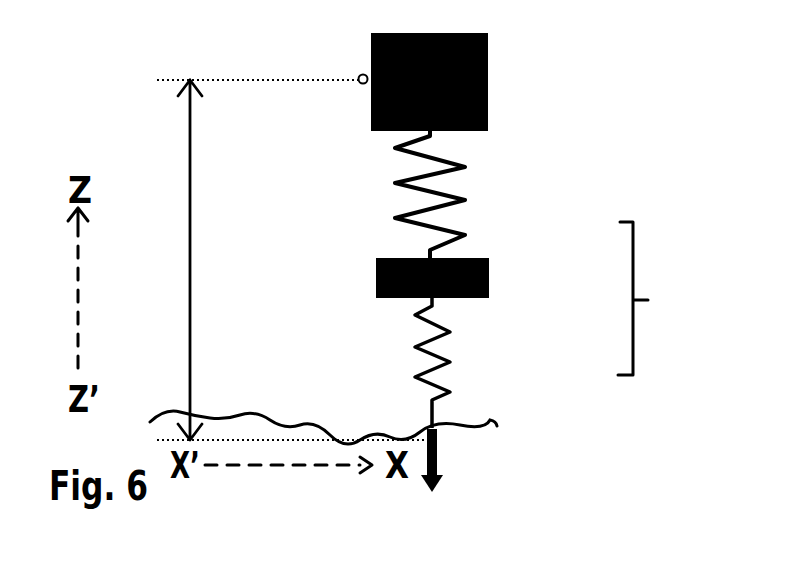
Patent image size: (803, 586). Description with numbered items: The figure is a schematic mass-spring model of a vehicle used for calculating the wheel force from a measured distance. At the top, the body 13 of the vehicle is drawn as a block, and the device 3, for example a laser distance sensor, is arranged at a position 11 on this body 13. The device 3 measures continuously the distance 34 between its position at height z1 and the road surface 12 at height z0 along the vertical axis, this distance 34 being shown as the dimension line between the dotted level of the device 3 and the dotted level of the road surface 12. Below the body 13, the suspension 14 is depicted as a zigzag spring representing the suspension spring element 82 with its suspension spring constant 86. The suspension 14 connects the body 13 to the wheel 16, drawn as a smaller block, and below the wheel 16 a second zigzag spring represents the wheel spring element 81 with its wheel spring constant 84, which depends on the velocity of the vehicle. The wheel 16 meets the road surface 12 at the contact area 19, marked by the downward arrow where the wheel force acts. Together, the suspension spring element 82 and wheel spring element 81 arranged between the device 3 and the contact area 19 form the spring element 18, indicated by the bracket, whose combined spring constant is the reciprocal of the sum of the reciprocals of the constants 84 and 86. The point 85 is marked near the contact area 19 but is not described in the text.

The device 3 is at (362, 88).
The position 11 is at (352, 69).
The road surface 12 is at (472, 425).
The body 13 is at (492, 90).
The suspension 14 is at (439, 196).
The wheel 16 is at (382, 317).
The spring element 18 is at (657, 298).
The contact area 19 is at (442, 437).
The distance 34 is at (188, 342).
The wheel spring element 81 is at (511, 363).
The suspension spring element 82 is at (507, 196).
The wheel spring constant 84 is at (475, 323).
The contact point 85 is at (417, 477).
The suspension spring constant 86 is at (480, 204).